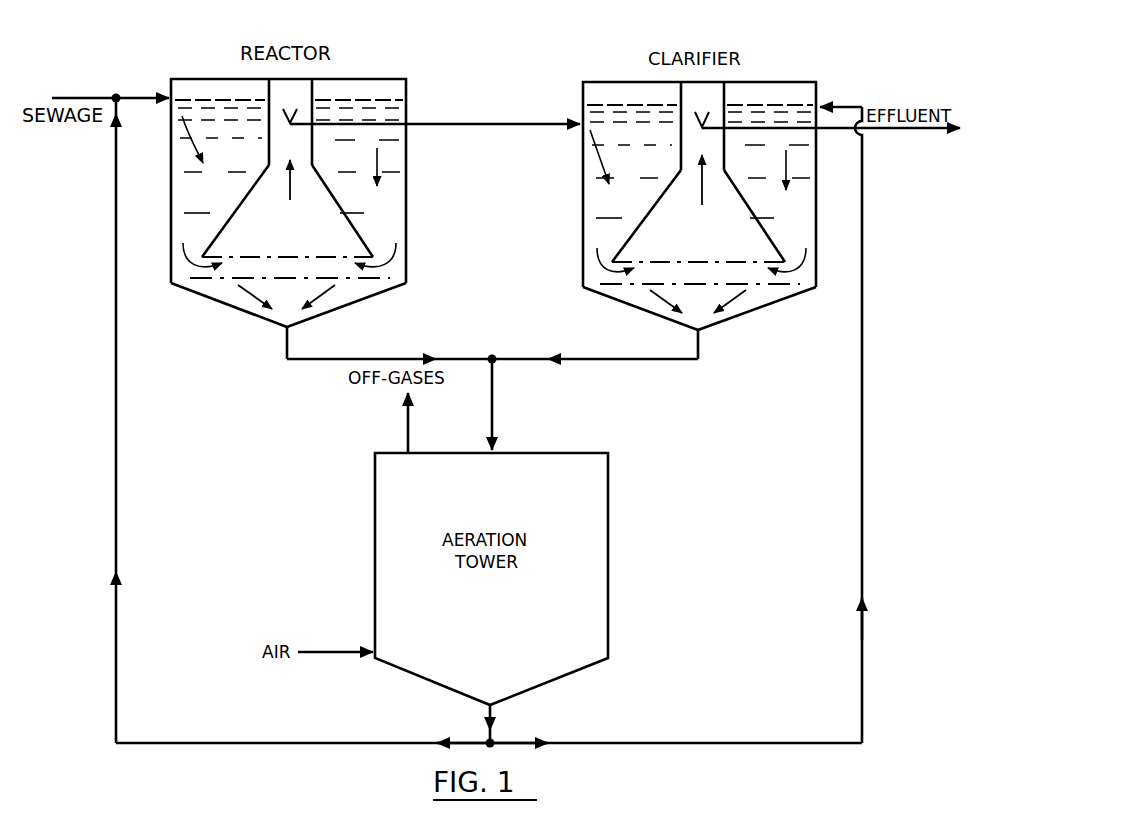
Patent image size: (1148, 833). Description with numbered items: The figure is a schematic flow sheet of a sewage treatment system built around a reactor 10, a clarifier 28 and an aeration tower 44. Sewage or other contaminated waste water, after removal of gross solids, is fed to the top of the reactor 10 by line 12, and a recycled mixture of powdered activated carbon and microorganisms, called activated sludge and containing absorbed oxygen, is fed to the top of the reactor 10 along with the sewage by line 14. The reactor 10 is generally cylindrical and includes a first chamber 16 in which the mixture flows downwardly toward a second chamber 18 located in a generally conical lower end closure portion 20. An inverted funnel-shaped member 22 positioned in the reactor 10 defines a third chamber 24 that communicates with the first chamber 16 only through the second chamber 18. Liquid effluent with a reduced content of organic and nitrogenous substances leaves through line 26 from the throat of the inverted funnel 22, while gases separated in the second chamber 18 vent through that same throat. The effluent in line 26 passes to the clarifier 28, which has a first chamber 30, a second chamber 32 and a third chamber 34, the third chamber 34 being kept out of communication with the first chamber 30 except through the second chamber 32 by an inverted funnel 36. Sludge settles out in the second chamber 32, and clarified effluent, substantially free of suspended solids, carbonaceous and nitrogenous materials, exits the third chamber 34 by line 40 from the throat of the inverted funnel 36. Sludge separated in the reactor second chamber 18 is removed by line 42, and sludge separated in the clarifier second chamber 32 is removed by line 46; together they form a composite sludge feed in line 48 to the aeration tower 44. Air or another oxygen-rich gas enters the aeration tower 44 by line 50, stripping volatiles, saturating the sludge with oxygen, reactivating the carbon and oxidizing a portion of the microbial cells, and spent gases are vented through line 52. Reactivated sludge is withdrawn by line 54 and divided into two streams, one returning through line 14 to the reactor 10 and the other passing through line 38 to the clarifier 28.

The reactor 10 is at (410, 69).
The line 12 is at (97, 97).
The line 14 is at (114, 418).
The first chamber 16 is at (227, 110).
The second chamber 18 is at (251, 301).
The lower end closure portion 20 is at (212, 301).
The inverted funnel-shaped member 22 is at (313, 90).
The third chamber 24 is at (333, 228).
The line 26 is at (458, 124).
The clarifier 28 is at (808, 71).
The first chamber 30 is at (598, 221).
The second chamber 32 is at (735, 297).
The third chamber 34 is at (648, 256).
The inverted funnel 36 is at (647, 213).
The line 38 is at (865, 280).
The line 40 is at (910, 129).
The line 42 is at (322, 360).
The aeration tower 44 is at (604, 595).
The line 46 is at (645, 360).
The line 48 is at (494, 402).
The line 50 is at (331, 652).
The line 52 is at (407, 430).
The line 54 is at (492, 716).